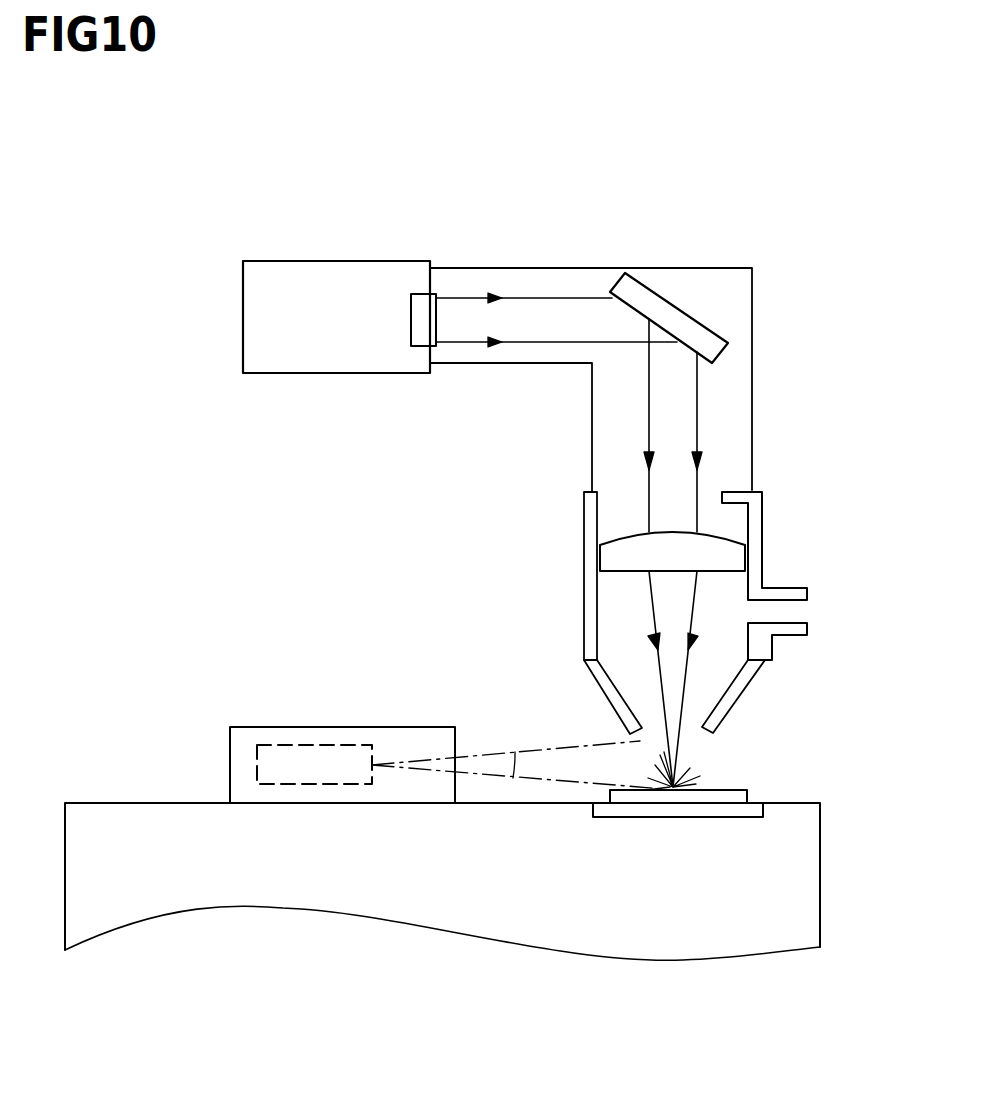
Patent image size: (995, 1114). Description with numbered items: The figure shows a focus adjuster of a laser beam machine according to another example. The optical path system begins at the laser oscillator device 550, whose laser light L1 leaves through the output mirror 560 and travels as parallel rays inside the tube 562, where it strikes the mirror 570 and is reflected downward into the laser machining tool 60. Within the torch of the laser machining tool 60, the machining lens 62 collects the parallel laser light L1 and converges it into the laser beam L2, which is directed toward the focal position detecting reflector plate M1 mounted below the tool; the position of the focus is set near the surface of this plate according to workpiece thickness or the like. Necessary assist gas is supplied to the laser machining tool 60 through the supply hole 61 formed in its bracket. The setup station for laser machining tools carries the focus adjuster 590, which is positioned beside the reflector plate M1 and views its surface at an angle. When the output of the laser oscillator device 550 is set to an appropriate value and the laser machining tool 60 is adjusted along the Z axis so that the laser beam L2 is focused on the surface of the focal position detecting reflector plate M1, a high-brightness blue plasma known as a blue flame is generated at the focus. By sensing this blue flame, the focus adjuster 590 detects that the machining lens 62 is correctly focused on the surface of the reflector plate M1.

The laser oscillator device 550 is at (340, 272).
The output mirror 560 is at (427, 306).
The mirror 570 is at (673, 313).
The tube 562 is at (753, 393).
The laser machining tool 60 is at (792, 525).
The supply hole 61 is at (807, 589).
The machining lens 62 is at (618, 552).
The focus adjuster 590 is at (332, 755).
The laser light L1 is at (568, 297).
The laser beam L2 is at (688, 690).
The machining point / spark BF is at (693, 763).
The focal position detecting reflector plate M1 is at (733, 797).